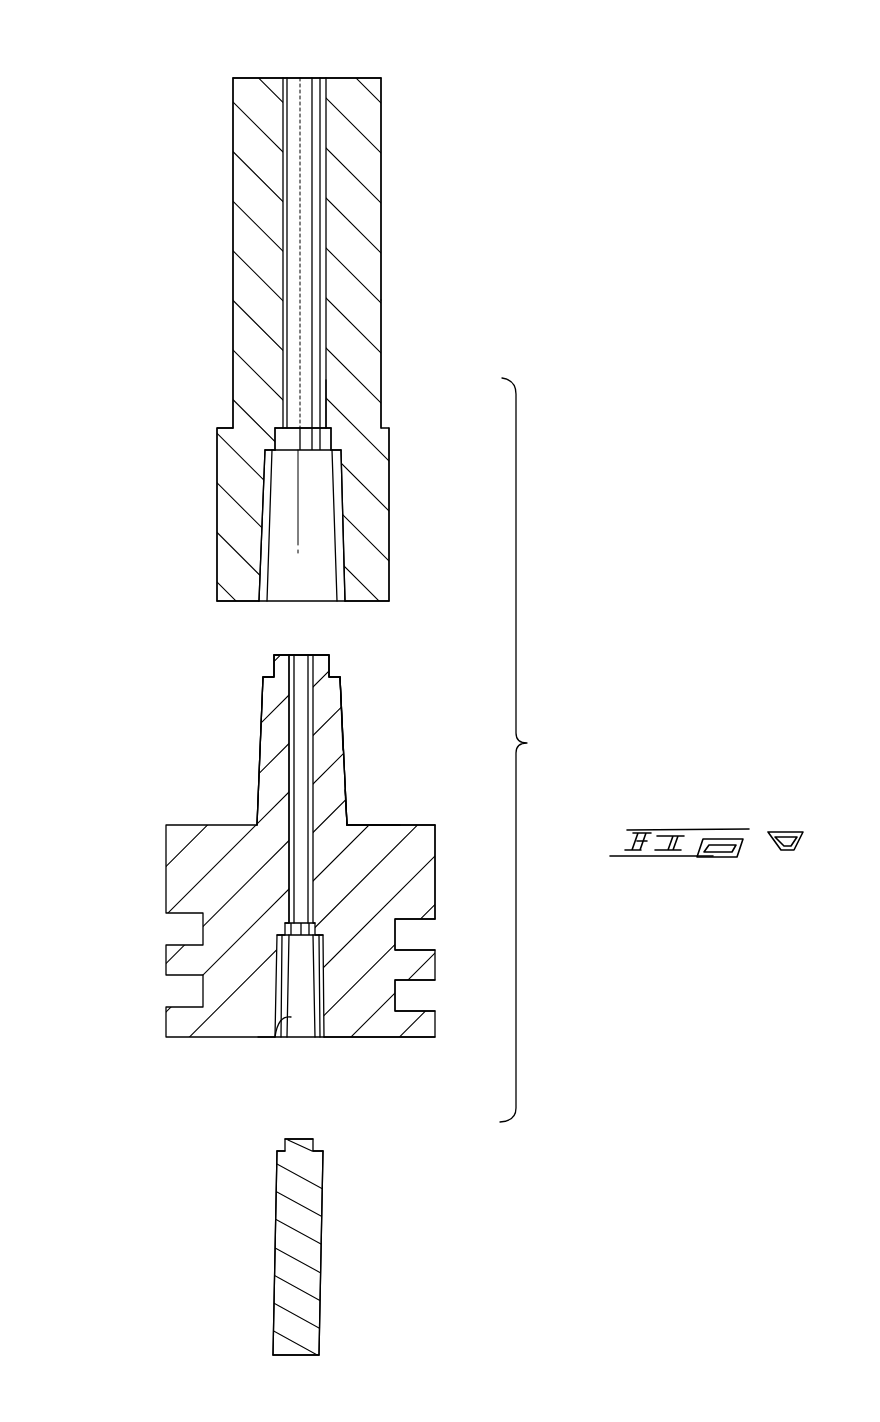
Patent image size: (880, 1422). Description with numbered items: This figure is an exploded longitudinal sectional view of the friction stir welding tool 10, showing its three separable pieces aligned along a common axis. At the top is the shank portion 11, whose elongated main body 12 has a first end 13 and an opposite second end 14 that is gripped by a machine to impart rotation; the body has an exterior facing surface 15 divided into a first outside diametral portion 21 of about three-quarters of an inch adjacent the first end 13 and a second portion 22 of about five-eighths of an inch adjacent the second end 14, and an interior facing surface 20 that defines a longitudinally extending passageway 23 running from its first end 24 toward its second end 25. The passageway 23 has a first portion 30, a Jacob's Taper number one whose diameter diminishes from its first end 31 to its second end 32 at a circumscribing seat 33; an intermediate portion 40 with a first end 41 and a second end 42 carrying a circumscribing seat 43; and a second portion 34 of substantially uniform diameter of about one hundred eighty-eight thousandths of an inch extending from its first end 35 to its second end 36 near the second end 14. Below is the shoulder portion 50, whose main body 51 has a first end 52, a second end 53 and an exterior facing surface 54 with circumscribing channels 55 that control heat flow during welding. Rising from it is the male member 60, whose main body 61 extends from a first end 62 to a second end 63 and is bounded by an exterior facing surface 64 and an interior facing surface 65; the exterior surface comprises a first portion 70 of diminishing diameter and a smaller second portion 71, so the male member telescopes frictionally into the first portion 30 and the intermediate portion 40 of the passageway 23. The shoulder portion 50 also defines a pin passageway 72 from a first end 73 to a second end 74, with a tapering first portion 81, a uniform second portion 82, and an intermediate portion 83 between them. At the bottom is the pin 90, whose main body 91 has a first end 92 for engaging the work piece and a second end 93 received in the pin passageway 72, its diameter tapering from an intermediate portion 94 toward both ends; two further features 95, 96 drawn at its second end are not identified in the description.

The friction stir welding tool 10 is at (528, 744).
The shank portion 11 is at (470, 259).
The main body 12 is at (243, 330).
The first end 13 is at (366, 602).
The second end 14 is at (256, 78).
The exterior facing surface 15 is at (381, 312).
The interior facing surface 20 is at (284, 228).
The first outside diametral portion 21 is at (390, 485).
The second portion 22 is at (381, 132).
The longitudinally extending passageway 23 is at (316, 200).
The first end 24 is at (335, 525).
The second end 25 is at (308, 80).
The first portion 30 is at (275, 545).
The first end 31 is at (275, 598).
The second end 32 is at (228, 432).
The circumscribing seat 33 is at (341, 448).
The second portion 34 is at (329, 270).
The first end 35 is at (312, 415).
The second end 36 is at (290, 78).
The intermediate portion 40 is at (235, 378).
The first end 41 is at (233, 405).
The second end 42 is at (326, 422).
The circumscribing seat 43 is at (295, 416).
The shoulder portion 50 is at (108, 886).
The main body 51 is at (425, 848).
The first end 52 is at (402, 1042).
The second end 53 is at (410, 830).
The exterior facing surface 54 is at (435, 878).
The circumscribing channels 55 is at (444, 994).
The male member 60 is at (197, 722).
The main body 61 is at (342, 726).
The first end 62 is at (340, 824).
The second end 63 is at (332, 654).
The exterior facing surface 64 is at (259, 782).
The interior facing surface 65 is at (294, 703).
The first portion 70 is at (346, 764).
The second portion 71 is at (334, 675).
The pin passageway 72 is at (272, 972).
The first end 73 is at (290, 1038).
The second end 74 is at (300, 655).
The first portion 81 is at (270, 1002).
The second portion 82 is at (279, 815).
The intermediate portion 83 is at (287, 927).
The pin 90 is at (400, 1298).
The main body 91 is at (280, 1292).
The first end 92 is at (312, 1340).
The second end 93 is at (307, 1144).
The intermediate portion 94 is at (323, 1248).
The shoulder 95 is at (278, 1150).
The tip 96 is at (298, 1138).